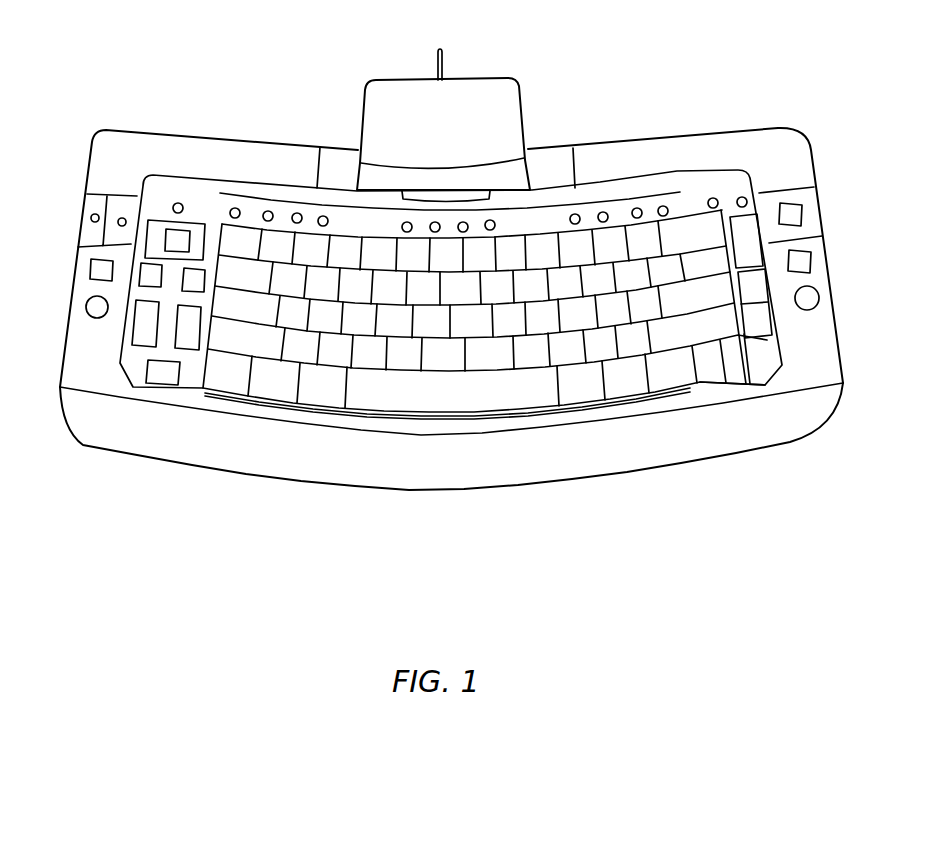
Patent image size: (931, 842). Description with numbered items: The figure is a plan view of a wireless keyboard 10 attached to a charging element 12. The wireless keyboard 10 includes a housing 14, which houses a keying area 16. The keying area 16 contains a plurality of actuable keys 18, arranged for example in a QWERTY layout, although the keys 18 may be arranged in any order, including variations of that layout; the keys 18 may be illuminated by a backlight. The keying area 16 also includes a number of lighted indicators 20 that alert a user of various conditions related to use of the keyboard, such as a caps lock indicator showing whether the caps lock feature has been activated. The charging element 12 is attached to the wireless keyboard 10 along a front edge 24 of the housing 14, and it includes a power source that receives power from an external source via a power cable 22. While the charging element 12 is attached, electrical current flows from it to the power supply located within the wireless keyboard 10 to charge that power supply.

The wireless keyboard 10 is at (170, 493).
The charging element 12 is at (390, 103).
The housing 14 is at (108, 415).
The keying area 16 is at (415, 435).
The actuable keys 18 is at (283, 378).
The lighted indicators 20 is at (123, 227).
The power cable 22 is at (443, 62).
The front edge 24 is at (265, 130).